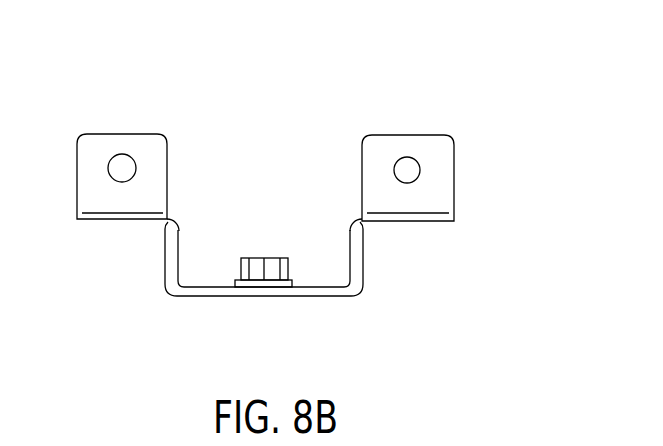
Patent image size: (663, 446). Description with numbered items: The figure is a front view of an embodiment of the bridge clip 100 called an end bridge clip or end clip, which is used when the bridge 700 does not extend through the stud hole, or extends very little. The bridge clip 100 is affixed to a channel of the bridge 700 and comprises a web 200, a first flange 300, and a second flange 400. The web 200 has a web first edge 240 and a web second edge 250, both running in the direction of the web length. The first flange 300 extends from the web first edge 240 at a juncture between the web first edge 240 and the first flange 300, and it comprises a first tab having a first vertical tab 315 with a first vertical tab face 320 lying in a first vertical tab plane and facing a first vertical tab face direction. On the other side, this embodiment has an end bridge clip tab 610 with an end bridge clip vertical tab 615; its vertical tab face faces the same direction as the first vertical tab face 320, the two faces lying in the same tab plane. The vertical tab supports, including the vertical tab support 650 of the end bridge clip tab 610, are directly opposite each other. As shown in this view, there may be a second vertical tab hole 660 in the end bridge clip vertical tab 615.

The bridge clip 100 is at (270, 104).
The web 200 is at (267, 297).
The web first edge 240 is at (168, 292).
The web second edge 250 is at (357, 294).
The first flange 300 is at (181, 253).
The first vertical tab 315 is at (133, 130).
The first vertical tab face 320 is at (108, 206).
The second flange 400 is at (347, 257).
The end bridge clip tab 610 is at (452, 181).
The end bridge clip vertical tab 615 is at (394, 131).
The vertical tab support 650 is at (432, 224).
The second vertical tab hole 660 is at (418, 176).
The bridge 700 is at (366, 256).